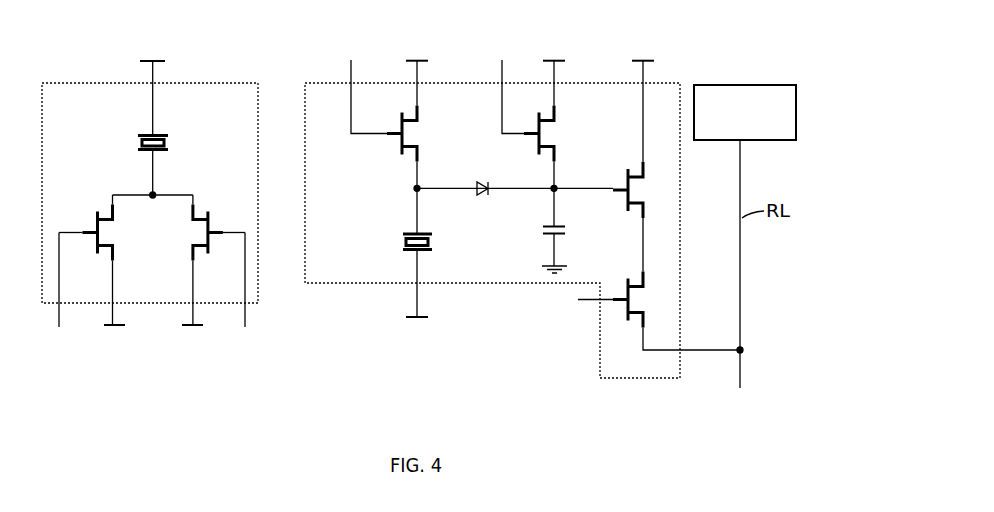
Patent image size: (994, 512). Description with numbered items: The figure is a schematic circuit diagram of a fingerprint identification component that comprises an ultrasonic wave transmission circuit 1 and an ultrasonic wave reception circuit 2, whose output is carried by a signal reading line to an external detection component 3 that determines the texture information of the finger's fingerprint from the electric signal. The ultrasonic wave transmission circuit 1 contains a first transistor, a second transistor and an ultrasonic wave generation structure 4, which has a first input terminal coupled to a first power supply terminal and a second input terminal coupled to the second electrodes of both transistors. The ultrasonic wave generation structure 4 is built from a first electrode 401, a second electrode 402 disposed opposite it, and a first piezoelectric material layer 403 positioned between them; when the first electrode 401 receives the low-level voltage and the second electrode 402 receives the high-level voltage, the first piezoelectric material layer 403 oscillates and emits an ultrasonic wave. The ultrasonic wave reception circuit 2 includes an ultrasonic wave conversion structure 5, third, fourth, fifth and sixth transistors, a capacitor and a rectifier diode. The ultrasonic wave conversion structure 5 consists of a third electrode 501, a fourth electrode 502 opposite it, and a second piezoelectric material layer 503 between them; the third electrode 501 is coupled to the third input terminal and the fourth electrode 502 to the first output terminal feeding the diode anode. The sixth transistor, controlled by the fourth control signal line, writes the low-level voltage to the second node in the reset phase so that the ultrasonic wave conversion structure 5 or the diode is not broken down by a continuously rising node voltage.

The ultrasonic wave transmission circuit 1 is at (71, 83).
The ultrasonic wave reception circuit 2 is at (327, 83).
The detection component 3 is at (743, 85).
The ultrasonic wave generation structure 4 is at (82, 115).
The first electrode 401 is at (142, 134).
The second electrode 402 is at (142, 151).
The first piezoelectric material layer 403 is at (139, 143).
The ultrasonic wave conversion structure 5 is at (487, 212).
The third electrode 501 is at (424, 252).
The fourth electrode 502 is at (427, 232).
The second piezoelectric material layer 503 is at (431, 242).